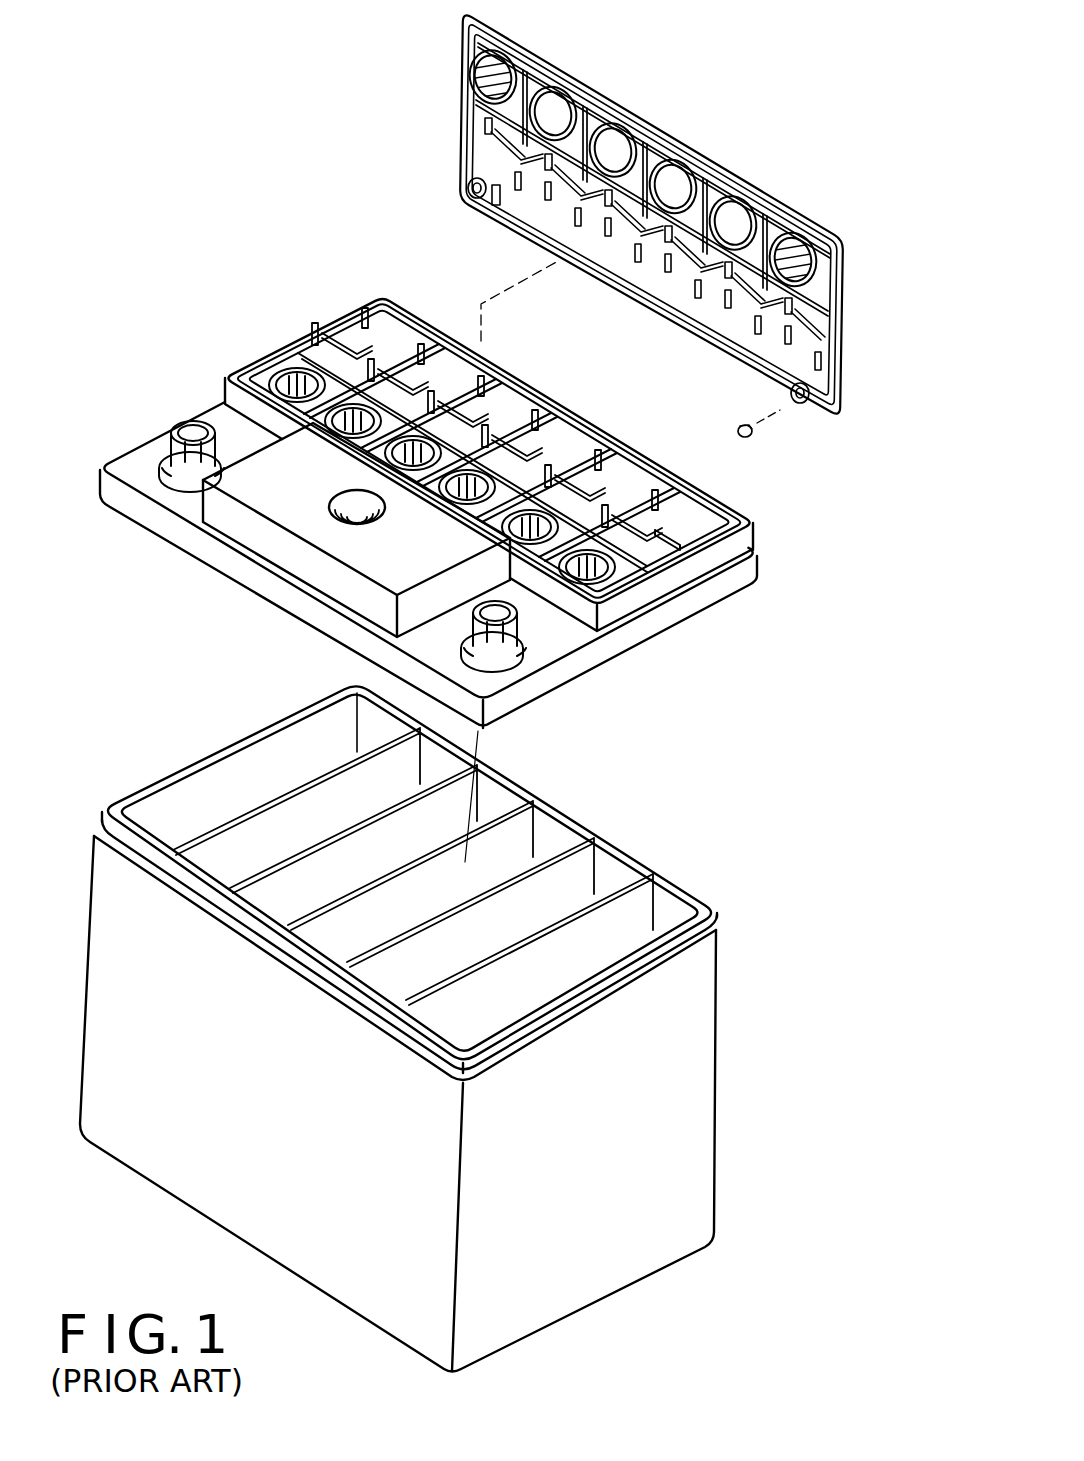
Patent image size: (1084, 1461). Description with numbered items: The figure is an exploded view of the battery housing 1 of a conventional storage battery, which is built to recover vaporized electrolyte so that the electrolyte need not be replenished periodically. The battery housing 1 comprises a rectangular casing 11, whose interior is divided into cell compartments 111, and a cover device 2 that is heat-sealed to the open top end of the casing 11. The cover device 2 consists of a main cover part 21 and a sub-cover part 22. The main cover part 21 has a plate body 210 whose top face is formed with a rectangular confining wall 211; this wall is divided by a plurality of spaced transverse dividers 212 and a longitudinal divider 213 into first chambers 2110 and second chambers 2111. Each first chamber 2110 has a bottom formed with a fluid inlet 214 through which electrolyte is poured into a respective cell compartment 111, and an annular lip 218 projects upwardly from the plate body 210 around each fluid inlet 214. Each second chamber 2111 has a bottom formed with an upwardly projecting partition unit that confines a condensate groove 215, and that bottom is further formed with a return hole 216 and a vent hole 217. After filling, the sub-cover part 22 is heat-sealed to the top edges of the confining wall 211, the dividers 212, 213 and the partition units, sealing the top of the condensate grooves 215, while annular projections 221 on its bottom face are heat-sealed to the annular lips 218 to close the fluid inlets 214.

The battery housing 1 is at (803, 698).
The casing 11 is at (699, 1068).
The cell compartment 111 is at (674, 916).
The cover device 2 is at (760, 488).
The main cover part 21 is at (667, 637).
The plate body 210 is at (143, 460).
The confining wall 211 is at (757, 540).
The transverse divider 212 is at (672, 495).
The longitudinal divider 213 is at (627, 572).
The fluid inlet 214 is at (263, 364).
The condensate groove 215 is at (670, 547).
The return hole 216 is at (320, 328).
The vent hole 217 is at (343, 353).
The annular lip 218 is at (223, 387).
The first chamber 2110 is at (295, 357).
The second chamber 2111 is at (387, 302).
The sub-cover part 22 is at (729, 167).
The annular projection 221 is at (767, 273).